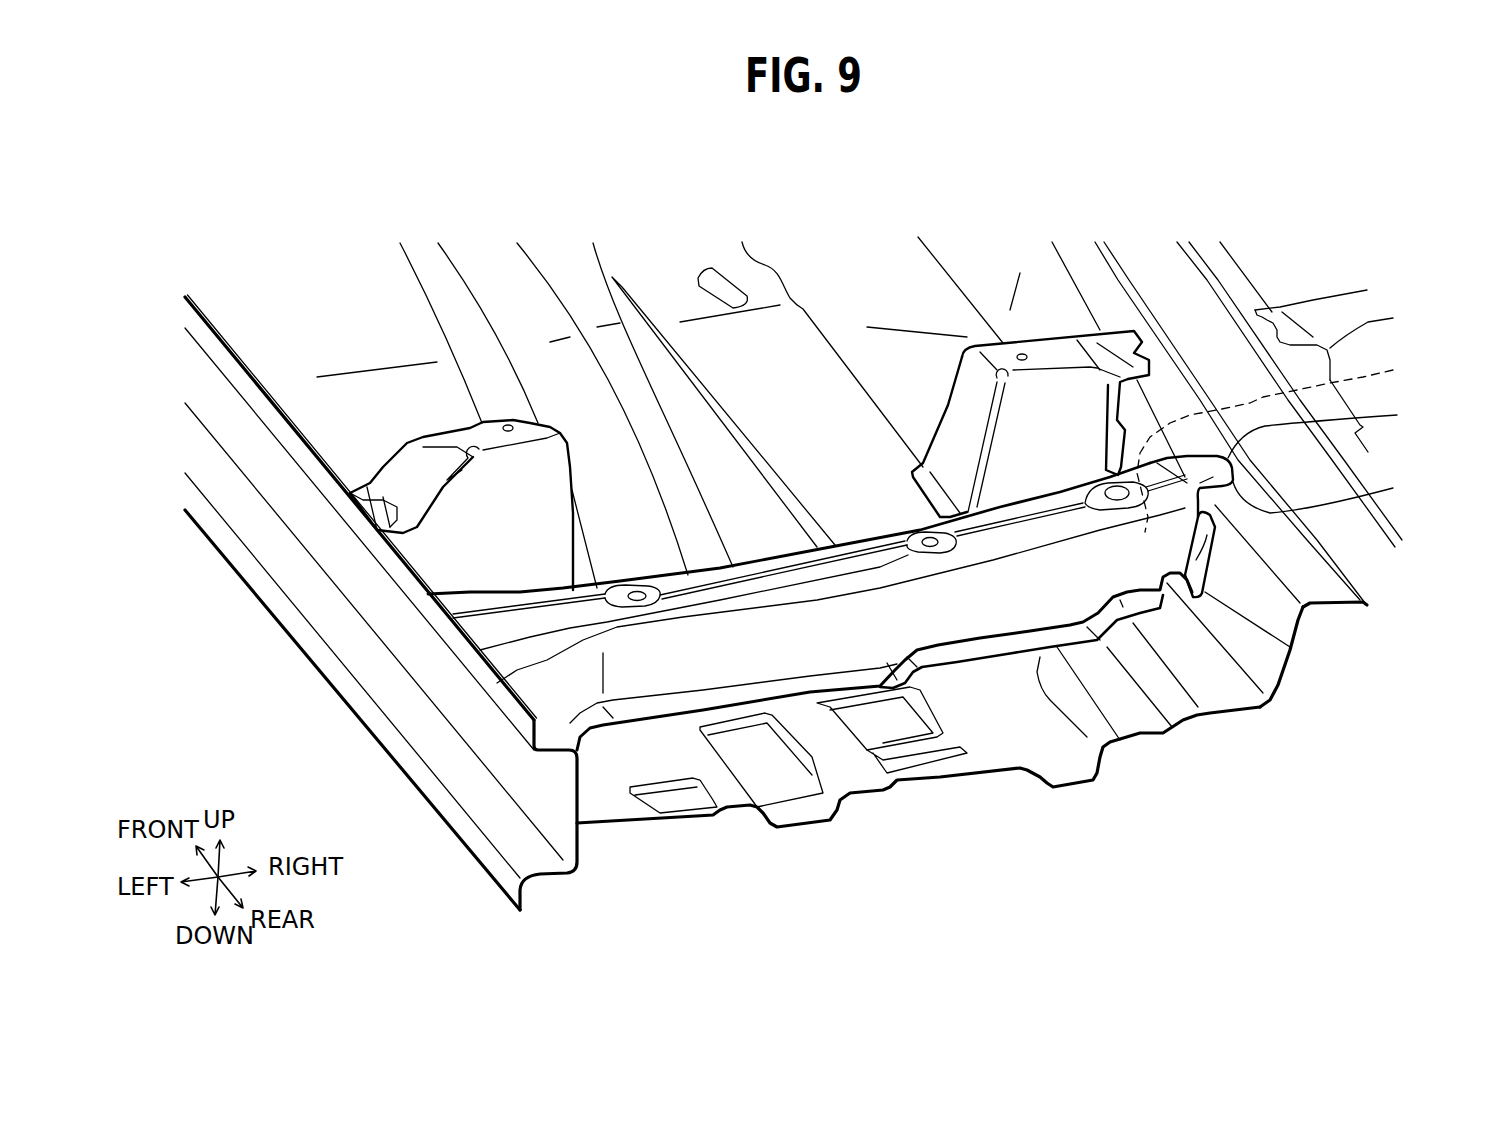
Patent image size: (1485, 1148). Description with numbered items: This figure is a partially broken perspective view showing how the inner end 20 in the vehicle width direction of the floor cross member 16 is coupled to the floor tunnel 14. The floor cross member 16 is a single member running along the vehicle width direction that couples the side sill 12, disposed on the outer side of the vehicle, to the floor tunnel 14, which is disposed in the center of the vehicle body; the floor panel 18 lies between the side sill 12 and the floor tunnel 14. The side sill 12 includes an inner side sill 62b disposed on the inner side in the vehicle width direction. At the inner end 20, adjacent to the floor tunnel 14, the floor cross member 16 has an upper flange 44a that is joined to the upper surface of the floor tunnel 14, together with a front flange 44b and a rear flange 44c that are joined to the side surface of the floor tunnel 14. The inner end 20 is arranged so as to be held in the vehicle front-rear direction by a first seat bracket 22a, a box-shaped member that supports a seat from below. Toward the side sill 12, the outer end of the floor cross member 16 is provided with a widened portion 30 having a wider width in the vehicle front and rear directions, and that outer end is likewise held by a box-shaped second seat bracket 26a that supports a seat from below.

The side sill 12 is at (294, 698).
The floor tunnel 14 is at (1255, 261).
The floor cross member 16 is at (833, 527).
The floor panel 18 is at (987, 741).
The inner end 20 is at (1397, 415).
The first seat bracket 22a is at (1037, 322).
The second seat bracket 26a is at (432, 424).
The widened portion 30 is at (491, 574).
The upper flange 44a is at (1393, 488).
The front flange 44b is at (1393, 370).
The rear flange 44c is at (1287, 640).
The inner side sill 62b is at (577, 845).